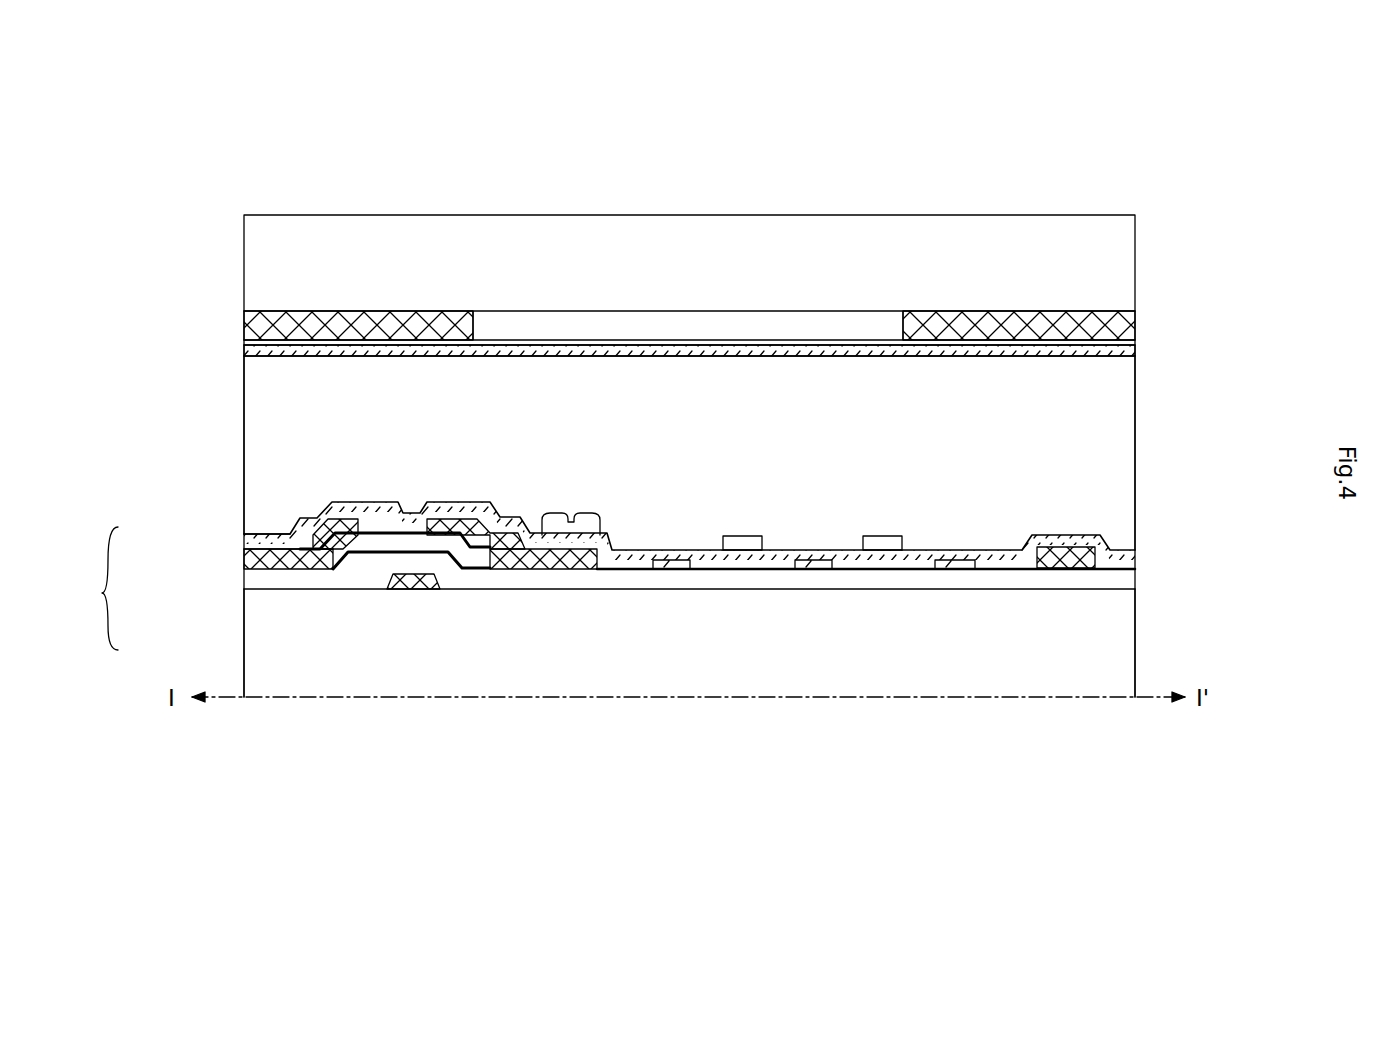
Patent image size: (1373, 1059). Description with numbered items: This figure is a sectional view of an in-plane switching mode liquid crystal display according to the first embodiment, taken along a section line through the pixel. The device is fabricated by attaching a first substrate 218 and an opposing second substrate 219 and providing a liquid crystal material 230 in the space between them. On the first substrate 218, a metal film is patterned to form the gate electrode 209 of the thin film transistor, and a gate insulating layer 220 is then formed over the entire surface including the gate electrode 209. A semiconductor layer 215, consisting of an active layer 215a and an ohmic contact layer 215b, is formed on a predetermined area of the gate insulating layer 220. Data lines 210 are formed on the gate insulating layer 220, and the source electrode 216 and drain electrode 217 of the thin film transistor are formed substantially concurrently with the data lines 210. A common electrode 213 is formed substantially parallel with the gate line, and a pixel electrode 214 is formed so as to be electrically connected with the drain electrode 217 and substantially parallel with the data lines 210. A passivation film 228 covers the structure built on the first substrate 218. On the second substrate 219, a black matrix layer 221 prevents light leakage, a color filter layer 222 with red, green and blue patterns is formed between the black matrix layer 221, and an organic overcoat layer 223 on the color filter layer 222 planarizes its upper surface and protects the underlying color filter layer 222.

The gate electrode 209 is at (415, 590).
The data line 210 is at (1063, 545).
The common electrode 213 is at (955, 570).
The pixel electrode 214 is at (878, 551).
The semiconductor layer 215 is at (89, 588).
The active layer 215a is at (340, 568).
The ohmic contact layer 215b is at (310, 545).
The source electrode 216 is at (362, 520).
The drain electrode 217 is at (520, 562).
The first substrate 218 is at (1122, 640).
The second substrate 219 is at (258, 260).
The gate insulating layer 220 is at (1122, 582).
The black matrix layer 221 is at (246, 327).
The color filter layer 222 is at (700, 323).
The organic overcoat layer 223 is at (247, 348).
The passivation film 228 is at (1122, 558).
The liquid crystal material 230 is at (1120, 422).